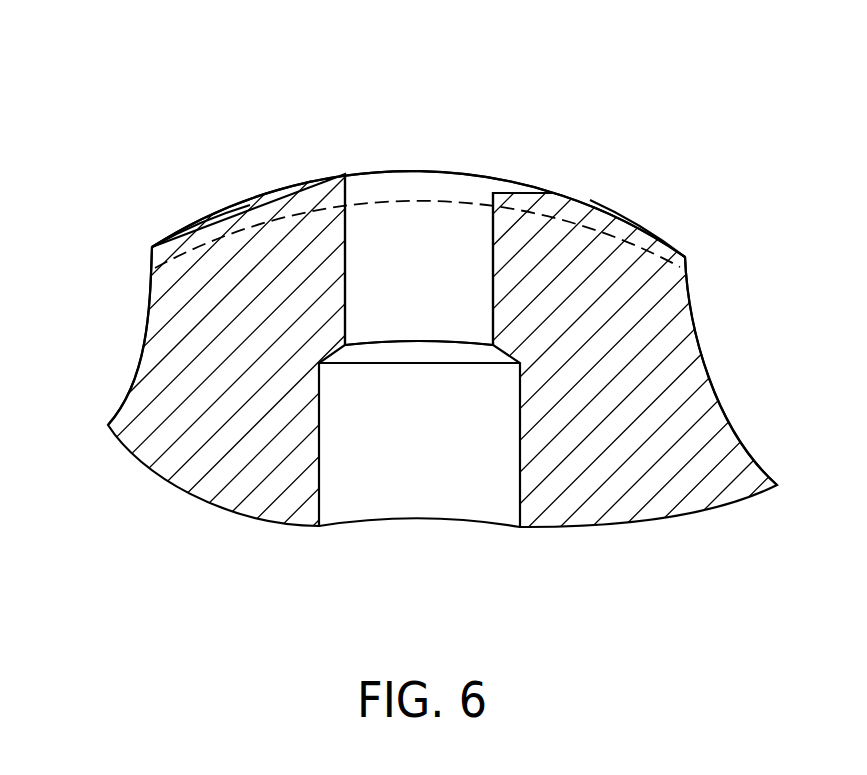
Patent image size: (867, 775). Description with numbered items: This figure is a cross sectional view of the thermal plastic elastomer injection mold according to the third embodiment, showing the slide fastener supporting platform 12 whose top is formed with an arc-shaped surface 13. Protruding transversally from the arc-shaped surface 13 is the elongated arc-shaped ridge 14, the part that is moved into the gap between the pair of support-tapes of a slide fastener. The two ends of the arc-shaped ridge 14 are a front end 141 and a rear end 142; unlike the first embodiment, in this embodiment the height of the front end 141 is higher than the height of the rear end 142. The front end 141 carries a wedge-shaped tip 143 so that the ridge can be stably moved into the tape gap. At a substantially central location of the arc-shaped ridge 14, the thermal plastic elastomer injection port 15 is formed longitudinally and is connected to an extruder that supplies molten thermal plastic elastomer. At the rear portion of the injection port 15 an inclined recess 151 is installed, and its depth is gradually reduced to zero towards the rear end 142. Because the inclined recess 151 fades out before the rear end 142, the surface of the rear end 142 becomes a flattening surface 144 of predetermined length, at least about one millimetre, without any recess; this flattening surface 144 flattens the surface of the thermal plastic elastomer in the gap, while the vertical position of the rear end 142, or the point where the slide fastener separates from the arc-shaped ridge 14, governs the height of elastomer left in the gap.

The slide fastener supporting platform 12 is at (642, 462).
The arc-shaped surface 13 is at (213, 240).
The arc-shaped ridge 14 is at (282, 185).
The front end 141 is at (187, 222).
The rear end 142 is at (687, 262).
The wedge-shaped tip 143 is at (150, 258).
The flattening surface 144 is at (630, 213).
The thermal plastic elastomer injection port 15 is at (422, 187).
The inclined recess 151 is at (522, 198).